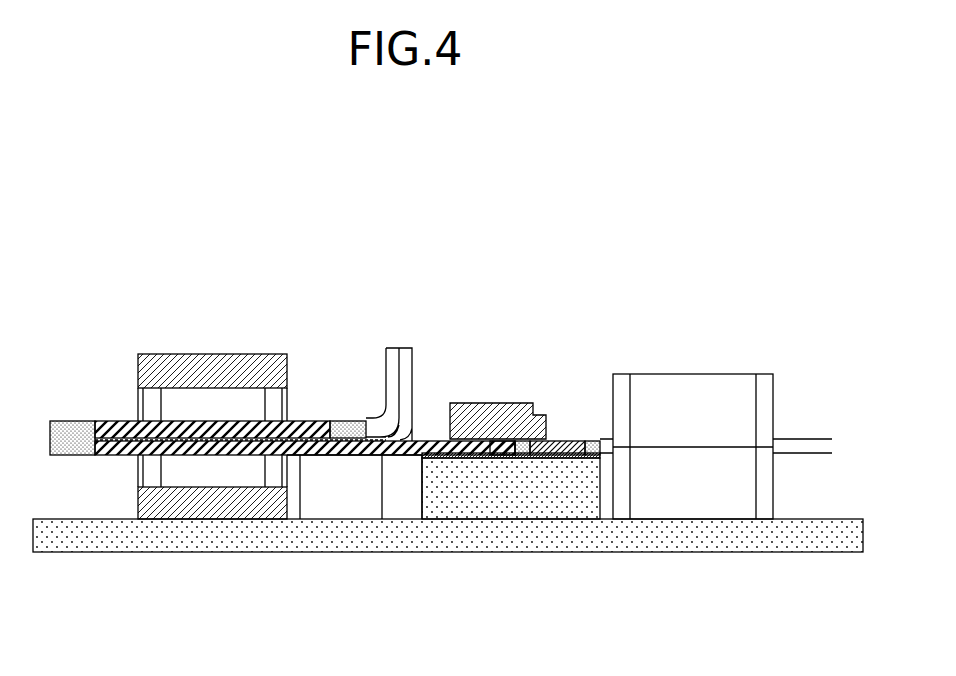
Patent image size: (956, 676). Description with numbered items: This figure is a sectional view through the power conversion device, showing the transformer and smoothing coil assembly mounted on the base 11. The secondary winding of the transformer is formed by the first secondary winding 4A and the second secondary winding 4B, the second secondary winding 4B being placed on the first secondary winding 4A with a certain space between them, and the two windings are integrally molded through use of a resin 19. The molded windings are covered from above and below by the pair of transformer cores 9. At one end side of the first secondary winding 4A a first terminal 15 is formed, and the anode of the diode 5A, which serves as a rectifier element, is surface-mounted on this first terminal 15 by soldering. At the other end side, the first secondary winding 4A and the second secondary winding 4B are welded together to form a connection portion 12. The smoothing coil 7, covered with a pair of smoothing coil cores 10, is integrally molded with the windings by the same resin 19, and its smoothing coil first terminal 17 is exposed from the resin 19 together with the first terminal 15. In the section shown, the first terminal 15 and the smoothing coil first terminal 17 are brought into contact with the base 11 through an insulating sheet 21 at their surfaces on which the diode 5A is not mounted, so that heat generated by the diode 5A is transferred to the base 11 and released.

The first secondary winding 4A is at (108, 455).
The second secondary winding 4B is at (312, 421).
The diode 5A is at (470, 415).
The smoothing coil 7 is at (810, 438).
The transformer cores 9 is at (175, 508).
The smoothing coil cores 10 is at (725, 398).
The base 11 is at (325, 540).
The connection portion 12 is at (405, 348).
The first terminal 15 is at (499, 447).
The smoothing coil first terminal 17 is at (560, 450).
The resin 19 is at (68, 433).
The insulating sheet 21 is at (452, 458).